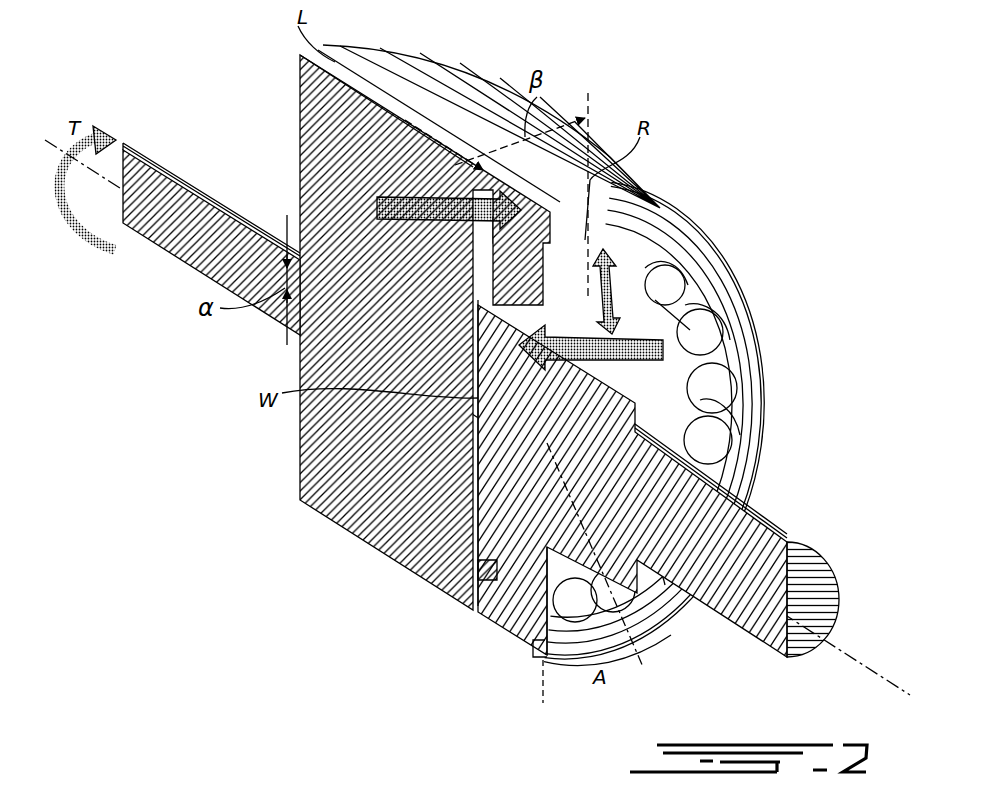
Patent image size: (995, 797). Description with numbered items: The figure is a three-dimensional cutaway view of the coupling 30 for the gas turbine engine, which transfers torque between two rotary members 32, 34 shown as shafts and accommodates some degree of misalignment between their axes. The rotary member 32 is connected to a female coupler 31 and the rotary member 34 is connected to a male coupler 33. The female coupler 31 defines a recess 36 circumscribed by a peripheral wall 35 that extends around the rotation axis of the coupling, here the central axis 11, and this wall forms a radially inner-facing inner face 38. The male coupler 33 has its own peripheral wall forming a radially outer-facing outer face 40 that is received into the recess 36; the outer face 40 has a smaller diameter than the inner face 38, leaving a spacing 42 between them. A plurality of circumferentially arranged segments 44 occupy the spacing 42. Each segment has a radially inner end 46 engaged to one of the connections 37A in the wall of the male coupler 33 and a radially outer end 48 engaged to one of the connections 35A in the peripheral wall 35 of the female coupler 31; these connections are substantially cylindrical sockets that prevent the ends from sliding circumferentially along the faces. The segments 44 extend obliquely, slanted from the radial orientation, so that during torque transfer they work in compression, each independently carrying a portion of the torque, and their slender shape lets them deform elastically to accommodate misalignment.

The central axis 11 is at (858, 665).
The coupling 30 is at (619, 97).
The female coupler 31 is at (515, 652).
The rotary member 32 is at (207, 190).
The male coupler 33 is at (612, 640).
The rotary member 34 is at (788, 535).
The peripheral wall 35 is at (543, 645).
The connections 35A is at (708, 385).
The recess 36 is at (483, 582).
The connections 37A is at (692, 340).
The inner face 38 is at (548, 213).
The outer face 40 is at (632, 262).
The spacing 42 is at (425, 548).
The segments 44 is at (700, 330).
The radially inner end 46 is at (665, 330).
The radially outer end 48 is at (655, 292).